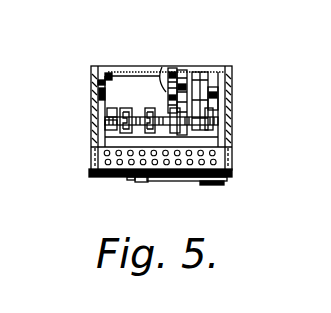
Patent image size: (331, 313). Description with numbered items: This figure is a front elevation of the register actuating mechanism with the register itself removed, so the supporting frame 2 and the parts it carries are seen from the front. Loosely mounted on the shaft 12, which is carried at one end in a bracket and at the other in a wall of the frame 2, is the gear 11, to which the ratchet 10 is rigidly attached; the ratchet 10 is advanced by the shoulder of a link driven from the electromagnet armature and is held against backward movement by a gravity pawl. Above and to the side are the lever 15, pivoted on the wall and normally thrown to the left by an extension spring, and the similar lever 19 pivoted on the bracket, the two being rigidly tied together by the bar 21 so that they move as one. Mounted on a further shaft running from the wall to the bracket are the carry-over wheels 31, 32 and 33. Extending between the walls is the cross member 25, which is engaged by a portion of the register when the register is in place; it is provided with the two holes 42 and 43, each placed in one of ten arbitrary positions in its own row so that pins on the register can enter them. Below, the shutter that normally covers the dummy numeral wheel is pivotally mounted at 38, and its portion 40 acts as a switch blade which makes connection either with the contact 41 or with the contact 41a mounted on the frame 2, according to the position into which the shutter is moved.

The frame 2 is at (89, 175).
The ratchet 10 is at (208, 130).
The gear 11 is at (193, 112).
The shaft 12 is at (207, 123).
The lever 15 is at (100, 99).
The lever 19 is at (163, 68).
The bar 21 is at (108, 129).
The cross member 25 is at (217, 160).
The carry-over wheel 31 is at (209, 107).
The carry-over wheel 32 is at (150, 107).
The carry-over wheel 33 is at (108, 134).
The shutter pivot 38 is at (222, 184).
The switch blade portion 40 is at (175, 182).
The contact 41 is at (147, 182).
The contact 41a is at (128, 178).
The hole 42 is at (108, 177).
The hole 43 is at (117, 177).